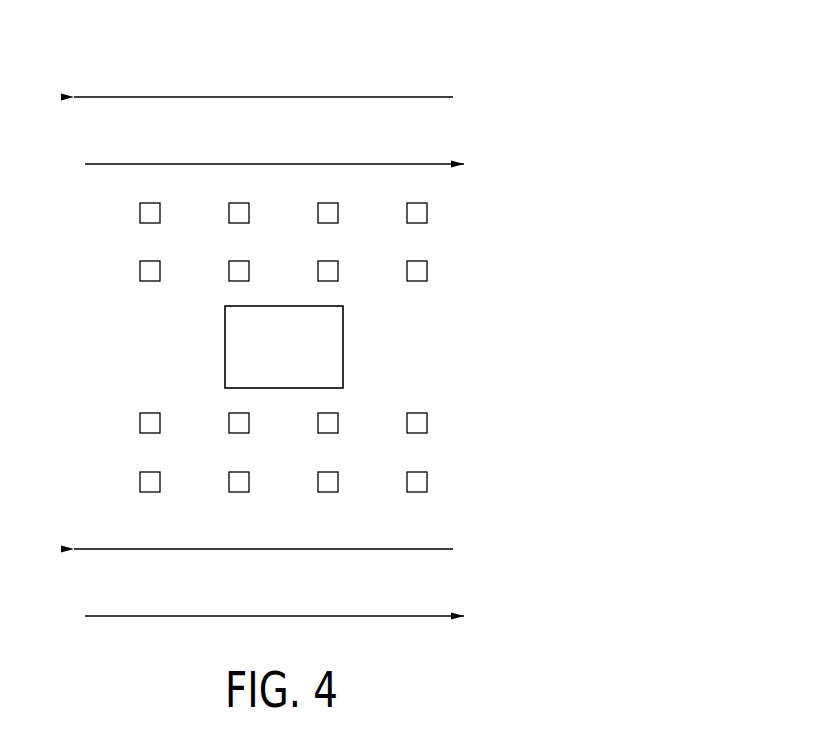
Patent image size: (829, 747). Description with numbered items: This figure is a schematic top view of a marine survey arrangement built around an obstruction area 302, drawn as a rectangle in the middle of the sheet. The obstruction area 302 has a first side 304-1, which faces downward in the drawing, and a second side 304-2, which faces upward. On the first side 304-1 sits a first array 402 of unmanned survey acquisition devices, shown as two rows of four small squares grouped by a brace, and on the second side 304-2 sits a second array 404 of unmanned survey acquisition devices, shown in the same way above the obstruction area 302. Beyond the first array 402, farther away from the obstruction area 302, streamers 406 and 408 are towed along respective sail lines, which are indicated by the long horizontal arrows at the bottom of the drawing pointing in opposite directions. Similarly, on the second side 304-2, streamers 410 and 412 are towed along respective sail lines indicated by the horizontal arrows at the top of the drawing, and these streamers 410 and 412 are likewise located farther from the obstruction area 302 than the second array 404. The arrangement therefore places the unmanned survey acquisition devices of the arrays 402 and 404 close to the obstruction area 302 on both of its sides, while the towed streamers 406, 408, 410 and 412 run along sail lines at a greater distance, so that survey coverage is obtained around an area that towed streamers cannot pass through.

The obstruction area 302 is at (327, 352).
The first side of the obstruction area 304-1 is at (283, 388).
The second side of the obstruction area 304-2 is at (283, 306).
The first array of unmanned survey acquisition devices 402 is at (118, 402).
The second array of unmanned survey acquisition devices 404 is at (118, 193).
The streamer 406 is at (377, 608).
The streamer 408 is at (377, 541).
The streamer 410 is at (377, 156).
The streamer 412 is at (377, 89).